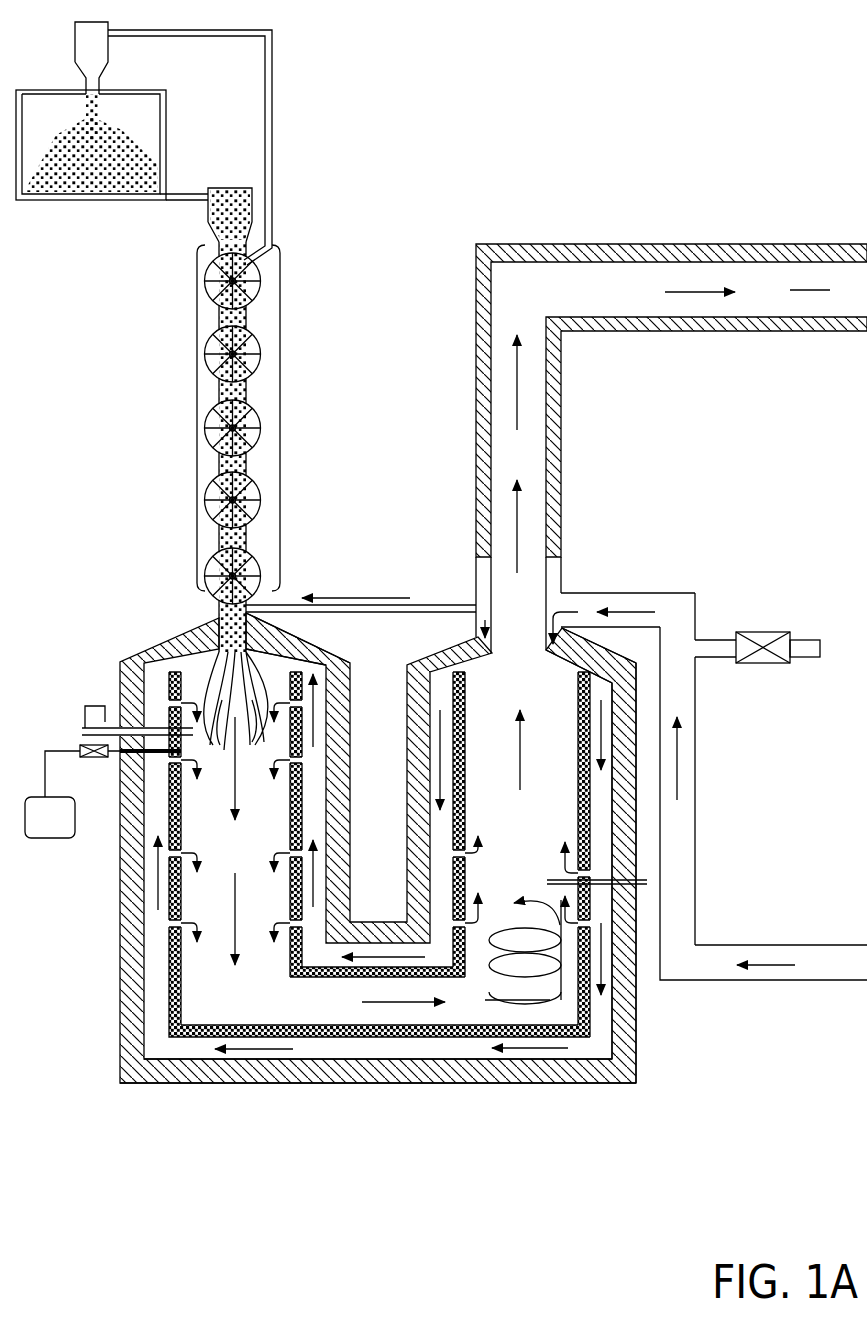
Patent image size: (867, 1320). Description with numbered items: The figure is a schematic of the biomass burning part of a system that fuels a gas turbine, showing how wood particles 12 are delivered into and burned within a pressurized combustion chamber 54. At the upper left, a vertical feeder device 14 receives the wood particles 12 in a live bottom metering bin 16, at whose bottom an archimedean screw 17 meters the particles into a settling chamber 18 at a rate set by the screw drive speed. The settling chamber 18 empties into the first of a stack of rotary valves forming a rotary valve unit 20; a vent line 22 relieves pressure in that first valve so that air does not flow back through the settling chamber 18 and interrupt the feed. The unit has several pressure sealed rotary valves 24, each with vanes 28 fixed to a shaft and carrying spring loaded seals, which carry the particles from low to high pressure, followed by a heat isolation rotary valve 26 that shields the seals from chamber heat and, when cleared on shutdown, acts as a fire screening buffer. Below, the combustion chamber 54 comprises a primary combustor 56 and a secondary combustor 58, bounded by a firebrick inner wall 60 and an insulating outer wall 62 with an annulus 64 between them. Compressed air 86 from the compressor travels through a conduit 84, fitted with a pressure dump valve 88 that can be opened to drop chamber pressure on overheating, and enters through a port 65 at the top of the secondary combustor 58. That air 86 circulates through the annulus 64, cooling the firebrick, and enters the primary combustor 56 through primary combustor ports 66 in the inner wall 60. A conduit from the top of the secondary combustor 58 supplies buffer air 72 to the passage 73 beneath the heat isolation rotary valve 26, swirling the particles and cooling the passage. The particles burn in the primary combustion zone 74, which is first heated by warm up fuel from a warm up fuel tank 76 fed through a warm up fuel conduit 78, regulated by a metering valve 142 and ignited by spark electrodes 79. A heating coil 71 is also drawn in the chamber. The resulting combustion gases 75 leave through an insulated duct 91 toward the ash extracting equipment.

The wood particles 12 is at (100, 197).
The feeder device 14 is at (374, 162).
The live bottom metering bin 16 is at (118, 215).
The archimedean screw 17 is at (165, 200).
The settling chamber 18 is at (246, 213).
The rotary valve unit 20 is at (232, 447).
The vent line 22 is at (274, 135).
The pressure sealed rotary valve 24 is at (186, 424).
The heat isolation rotary valve 26 is at (206, 582).
The vane 28 is at (207, 503).
The pressurized combustion chamber 54 is at (333, 874).
The primary combustor 56 is at (220, 932).
The secondary combustor 58 is at (588, 955).
The inner wall 60 is at (298, 1030).
The outer wall 62 is at (346, 1070).
The annulus 64 is at (463, 1050).
The port 65 is at (560, 645).
The primary combustor ports 66 is at (185, 760).
The heating coil 71 is at (590, 920).
The buffer air 72 is at (440, 605).
The passage 73 is at (250, 620).
The primary combustion zone 74 is at (230, 700).
The combustion gases 75 is at (538, 277).
The warm up fuel tank 76 is at (58, 839).
The warm up fuel conduit 78 is at (44, 762).
The spark electrodes 79 is at (78, 730).
The conduit 84 is at (727, 944).
The compressed air 86 is at (810, 962).
The pressure dump valve 88 is at (752, 664).
The duct 91 is at (664, 277).
The metering valve 142 is at (93, 758).